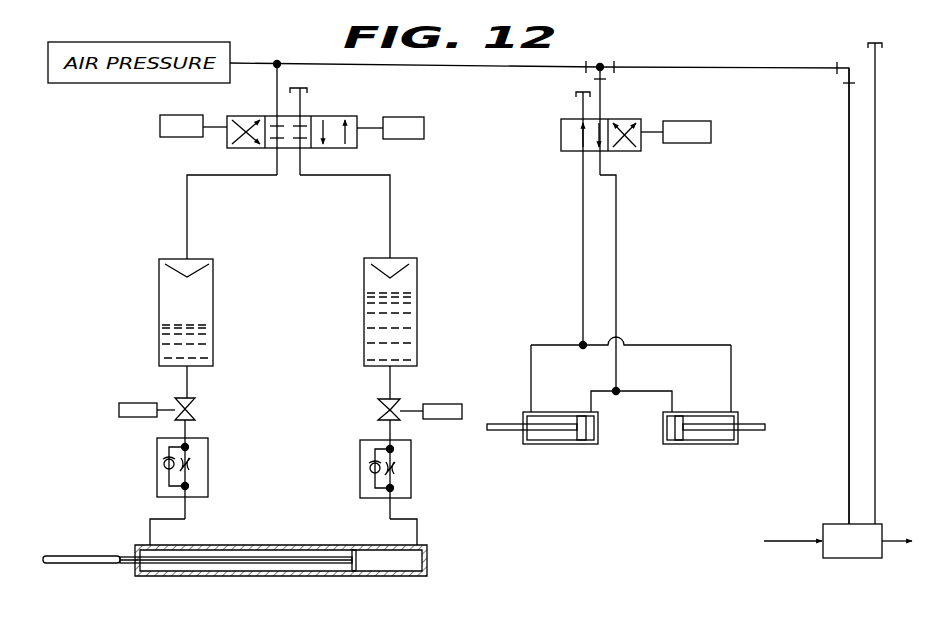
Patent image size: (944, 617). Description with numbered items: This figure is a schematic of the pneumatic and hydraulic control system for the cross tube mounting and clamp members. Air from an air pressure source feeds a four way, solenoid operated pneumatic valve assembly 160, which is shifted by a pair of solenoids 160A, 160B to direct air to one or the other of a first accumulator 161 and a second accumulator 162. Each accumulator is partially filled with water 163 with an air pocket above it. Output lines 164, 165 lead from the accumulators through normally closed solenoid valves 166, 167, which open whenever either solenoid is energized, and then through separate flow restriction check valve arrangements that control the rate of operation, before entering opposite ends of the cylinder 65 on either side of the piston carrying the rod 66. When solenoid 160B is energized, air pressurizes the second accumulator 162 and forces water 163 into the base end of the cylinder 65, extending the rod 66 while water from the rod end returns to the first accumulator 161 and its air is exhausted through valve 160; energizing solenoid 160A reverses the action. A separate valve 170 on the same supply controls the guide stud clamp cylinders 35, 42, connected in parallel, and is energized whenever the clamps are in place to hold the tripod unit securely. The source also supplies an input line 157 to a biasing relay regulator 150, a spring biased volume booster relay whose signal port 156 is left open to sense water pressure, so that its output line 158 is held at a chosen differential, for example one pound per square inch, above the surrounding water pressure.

The four way solenoid operated pneumatic valve assembly 160 is at (333, 116).
The solenoid 160A is at (172, 138).
The solenoid 160B is at (420, 116).
The first accumulator 161 is at (213, 287).
The second accumulator 162 is at (418, 303).
The water 163 is at (373, 321).
The output line 164 is at (185, 373).
The output line 165 is at (390, 383).
The solenoid valve 166 is at (195, 418).
The solenoid valve 167 is at (378, 403).
The cylinder 65 is at (290, 545).
The rod 66 is at (90, 556).
The valve 170 is at (620, 118).
The guide stud clamp cylinder 35 is at (575, 445).
The guide stud clamp cylinder 42 is at (712, 445).
The input line 157 is at (848, 296).
The input signal port 156 is at (786, 539).
The biasing relay regulator 150 is at (845, 560).
The output line 158 is at (888, 545).